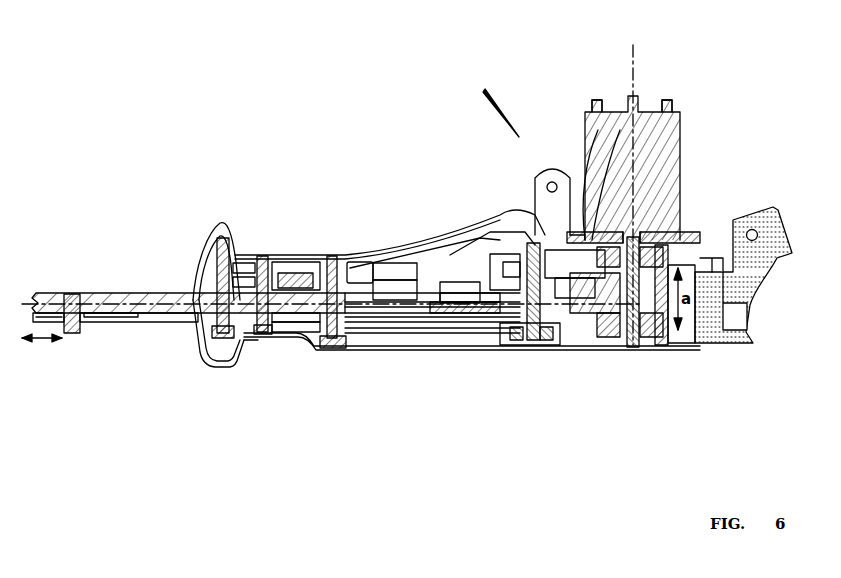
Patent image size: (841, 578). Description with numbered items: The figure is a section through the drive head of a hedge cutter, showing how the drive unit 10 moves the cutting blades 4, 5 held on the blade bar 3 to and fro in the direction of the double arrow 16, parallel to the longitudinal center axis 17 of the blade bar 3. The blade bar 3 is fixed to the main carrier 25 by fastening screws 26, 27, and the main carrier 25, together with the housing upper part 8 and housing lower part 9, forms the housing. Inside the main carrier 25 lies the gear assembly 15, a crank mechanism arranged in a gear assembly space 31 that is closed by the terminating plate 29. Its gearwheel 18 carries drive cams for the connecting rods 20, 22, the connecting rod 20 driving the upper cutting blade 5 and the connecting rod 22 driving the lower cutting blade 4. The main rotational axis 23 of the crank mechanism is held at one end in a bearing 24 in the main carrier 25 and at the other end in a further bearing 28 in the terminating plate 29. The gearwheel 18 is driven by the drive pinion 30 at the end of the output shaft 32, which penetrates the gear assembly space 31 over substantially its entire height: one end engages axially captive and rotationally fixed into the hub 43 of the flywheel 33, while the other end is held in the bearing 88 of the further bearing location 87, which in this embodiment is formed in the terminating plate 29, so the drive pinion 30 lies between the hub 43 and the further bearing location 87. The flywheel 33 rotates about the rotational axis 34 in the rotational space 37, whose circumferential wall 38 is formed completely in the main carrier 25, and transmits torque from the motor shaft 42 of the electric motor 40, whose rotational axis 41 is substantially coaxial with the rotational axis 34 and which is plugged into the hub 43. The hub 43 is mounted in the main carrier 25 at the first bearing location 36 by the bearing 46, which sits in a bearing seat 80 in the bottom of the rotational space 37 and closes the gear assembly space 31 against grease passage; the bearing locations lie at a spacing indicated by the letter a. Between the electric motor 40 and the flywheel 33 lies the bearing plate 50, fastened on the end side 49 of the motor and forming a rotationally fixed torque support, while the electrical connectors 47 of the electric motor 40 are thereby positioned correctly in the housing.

The blade bar 3 is at (123, 298).
The lower cutting blade 4 is at (126, 324).
The upper cutting blade 5 is at (133, 324).
The housing upper part 8 is at (223, 238).
The housing lower part 9 is at (237, 368).
The drive unit 10 is at (548, 170).
The gear assembly 15 is at (455, 272).
The double arrow 16 is at (44, 344).
The longitudinal center axis 17 is at (22, 300).
The gearwheel 18 is at (447, 300).
The connecting rod 20 is at (455, 316).
The connecting rod 22 is at (426, 326).
The main rotational axis 23 is at (527, 346).
The bearing 24 is at (452, 262).
The main carrier 25 is at (206, 278).
The fastening screw 26 is at (238, 262).
The fastening screw 27 is at (320, 352).
The bearing 28 is at (504, 346).
The terminating plate 29 is at (380, 352).
The drive pinion 30 is at (628, 300).
The gear assembly space 31 is at (482, 292).
The output shaft 32 is at (640, 348).
The flywheel 33 is at (700, 258).
The rotational axis 34 is at (633, 186).
The first bearing location 36 is at (580, 206).
The rotational space 37 is at (512, 270).
The circumferential wall 38 is at (520, 262).
The electric motor 40 is at (612, 148).
The rotational axis 41 is at (636, 48).
The motor shaft 42 is at (592, 180).
The hub 43 is at (608, 300).
The bearing 46 is at (530, 242).
The electrical connectors 47 is at (597, 100).
The end side 49 is at (682, 234).
The bearing plate 50 is at (672, 198).
The bearing seat 80 is at (592, 280).
The further bearing location 87 is at (680, 352).
The bearing 88 is at (660, 346).